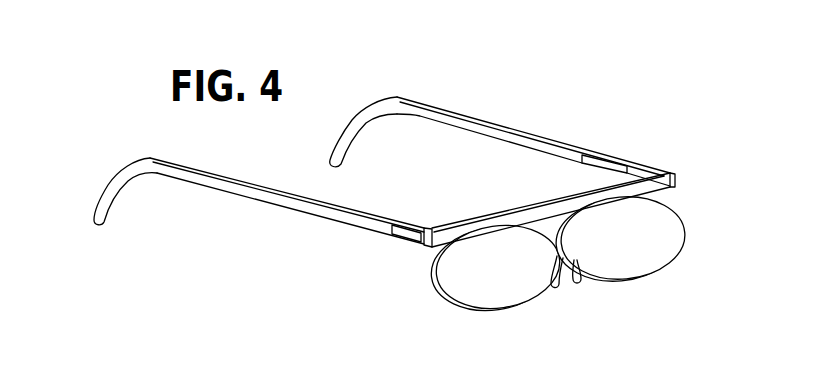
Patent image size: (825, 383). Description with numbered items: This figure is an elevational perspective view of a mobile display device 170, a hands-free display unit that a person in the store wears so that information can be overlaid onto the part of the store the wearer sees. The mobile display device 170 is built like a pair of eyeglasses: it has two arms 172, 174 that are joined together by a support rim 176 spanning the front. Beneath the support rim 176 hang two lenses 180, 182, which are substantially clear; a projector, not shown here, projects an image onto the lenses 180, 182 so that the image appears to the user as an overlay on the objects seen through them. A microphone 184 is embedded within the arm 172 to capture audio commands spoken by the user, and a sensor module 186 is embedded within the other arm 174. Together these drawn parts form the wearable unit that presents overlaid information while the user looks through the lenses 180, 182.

The mobile display device 170 is at (720, 118).
The arm 172 is at (263, 202).
The arm 174 is at (453, 112).
The support rim 176 is at (677, 177).
The lens 180 is at (685, 237).
The lens 182 is at (533, 298).
The microphone 184 is at (390, 230).
The sensor module 186 is at (593, 153).